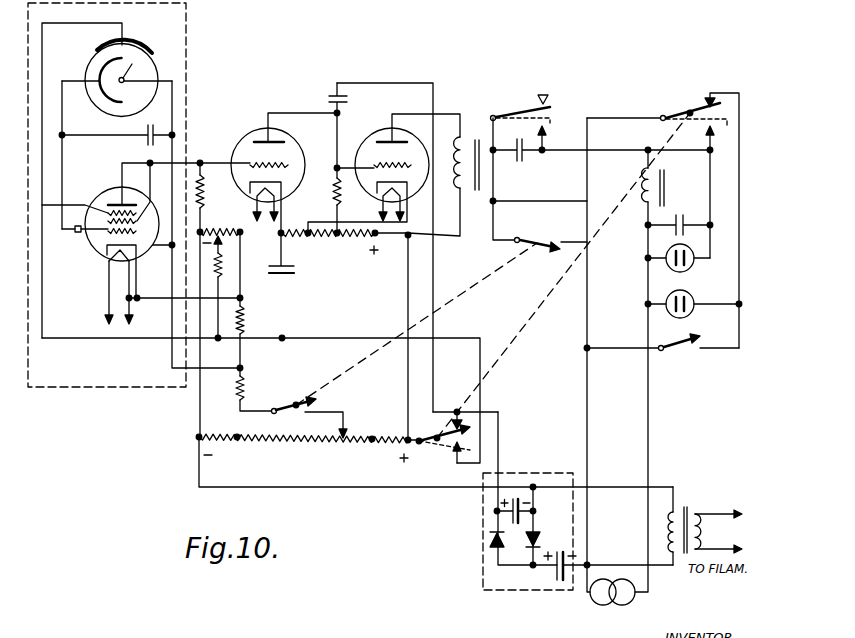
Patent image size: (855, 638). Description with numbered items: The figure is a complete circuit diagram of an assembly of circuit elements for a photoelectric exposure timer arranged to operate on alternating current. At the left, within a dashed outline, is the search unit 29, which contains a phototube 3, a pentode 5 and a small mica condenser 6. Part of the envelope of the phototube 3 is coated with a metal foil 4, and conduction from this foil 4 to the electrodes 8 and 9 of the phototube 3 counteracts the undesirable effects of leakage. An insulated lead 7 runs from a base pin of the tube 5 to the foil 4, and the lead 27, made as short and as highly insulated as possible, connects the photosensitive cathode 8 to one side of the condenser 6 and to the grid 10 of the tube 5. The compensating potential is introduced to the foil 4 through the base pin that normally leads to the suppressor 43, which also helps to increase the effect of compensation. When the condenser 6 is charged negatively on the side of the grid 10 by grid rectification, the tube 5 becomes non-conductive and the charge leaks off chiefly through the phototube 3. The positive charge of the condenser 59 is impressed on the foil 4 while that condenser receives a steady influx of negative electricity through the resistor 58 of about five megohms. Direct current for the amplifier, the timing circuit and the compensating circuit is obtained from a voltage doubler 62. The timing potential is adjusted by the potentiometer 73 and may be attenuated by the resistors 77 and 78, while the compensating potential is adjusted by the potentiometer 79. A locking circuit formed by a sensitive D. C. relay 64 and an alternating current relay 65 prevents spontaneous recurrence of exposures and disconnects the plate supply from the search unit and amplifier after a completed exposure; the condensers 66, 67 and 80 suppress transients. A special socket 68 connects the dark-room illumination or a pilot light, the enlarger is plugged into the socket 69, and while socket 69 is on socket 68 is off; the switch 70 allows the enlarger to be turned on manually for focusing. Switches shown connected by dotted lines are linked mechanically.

The phototube 3 is at (84, 68).
The metal foil 4 is at (147, 50).
The pentode 5 is at (99, 260).
The mica condenser 6 is at (146, 139).
The insulated lead 7 is at (100, 18).
The photosensitive cathode 8 is at (120, 101).
The electrode 9 is at (128, 72).
The grid 10 is at (78, 234).
The lead 27 is at (66, 116).
The search unit 29 is at (190, 74).
The suppressor 43 is at (100, 195).
The resistor 58 is at (223, 263).
The condenser 59 is at (290, 275).
The voltage doubler 62 is at (482, 560).
The sensitive D. C. relay 64 is at (488, 120).
The alternating current relay 65 is at (693, 128).
The condenser 66 is at (526, 156).
The condenser 67 is at (684, 222).
The socket 68 is at (693, 266).
The socket 69 is at (694, 312).
The switch 70 is at (678, 352).
The potentiometer 73 is at (309, 445).
The resistor 77 is at (243, 392).
The resistor 78 is at (245, 328).
The potentiometer 79 is at (221, 230).
The condenser 80 is at (331, 98).